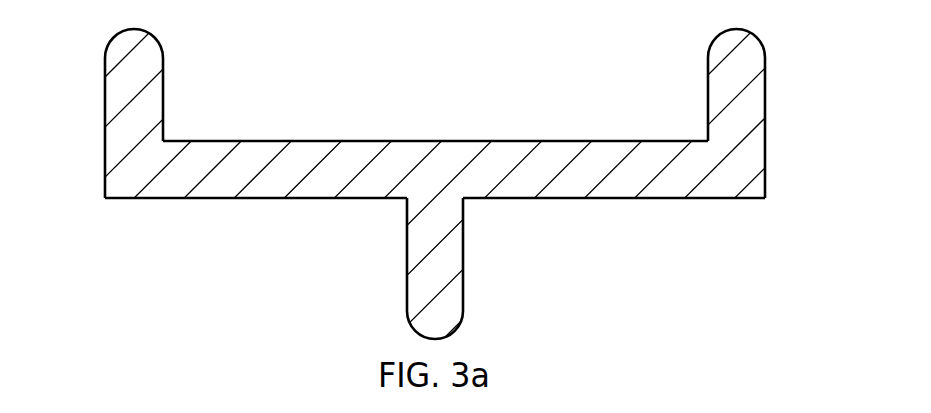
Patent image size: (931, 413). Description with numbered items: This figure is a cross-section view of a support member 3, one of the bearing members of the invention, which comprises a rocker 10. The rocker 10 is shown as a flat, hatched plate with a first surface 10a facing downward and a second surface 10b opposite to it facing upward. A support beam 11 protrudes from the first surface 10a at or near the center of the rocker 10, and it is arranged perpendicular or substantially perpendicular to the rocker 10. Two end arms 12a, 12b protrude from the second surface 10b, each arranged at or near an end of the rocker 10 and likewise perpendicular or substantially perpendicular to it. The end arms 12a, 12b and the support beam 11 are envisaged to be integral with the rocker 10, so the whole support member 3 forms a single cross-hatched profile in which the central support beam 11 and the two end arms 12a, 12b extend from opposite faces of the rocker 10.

The support member 3 is at (465, 200).
The rocker 10 is at (465, 200).
The first surface 10a is at (265, 198).
The second surface 10b is at (263, 140).
The support beam 11 is at (455, 255).
The end arm 12a is at (757, 97).
The end arm 12b is at (110, 95).